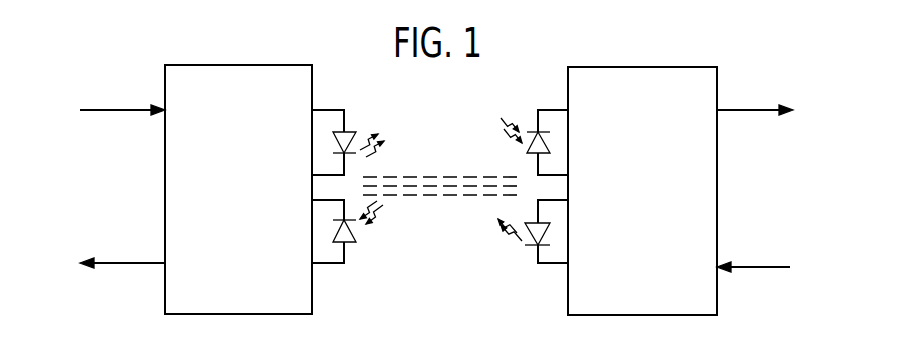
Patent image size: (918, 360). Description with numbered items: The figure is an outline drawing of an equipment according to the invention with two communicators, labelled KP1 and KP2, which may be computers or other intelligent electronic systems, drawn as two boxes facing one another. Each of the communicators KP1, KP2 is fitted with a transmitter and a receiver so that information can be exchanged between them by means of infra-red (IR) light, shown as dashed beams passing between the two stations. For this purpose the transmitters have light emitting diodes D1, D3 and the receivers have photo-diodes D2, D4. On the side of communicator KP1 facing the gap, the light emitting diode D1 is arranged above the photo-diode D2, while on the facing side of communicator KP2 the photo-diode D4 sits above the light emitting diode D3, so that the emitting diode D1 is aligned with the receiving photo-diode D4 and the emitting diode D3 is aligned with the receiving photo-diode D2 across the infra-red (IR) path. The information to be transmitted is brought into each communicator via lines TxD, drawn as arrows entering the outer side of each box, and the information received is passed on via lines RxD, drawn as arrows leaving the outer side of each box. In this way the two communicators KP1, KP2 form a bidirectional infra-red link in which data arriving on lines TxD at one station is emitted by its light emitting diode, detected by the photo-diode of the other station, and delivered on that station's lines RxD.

The communicator KP1 is at (238, 189).
The communicator KP2 is at (642, 191).
The light emitting diode D1 is at (358, 141).
The photo-diode D2 is at (358, 232).
The light emitting diode D3 is at (532, 247).
The photo-diode D4 is at (530, 131).
The infra-red light IR is at (443, 165).
The transmit data line TxD is at (109, 109).
The receive data line RxD is at (115, 262).